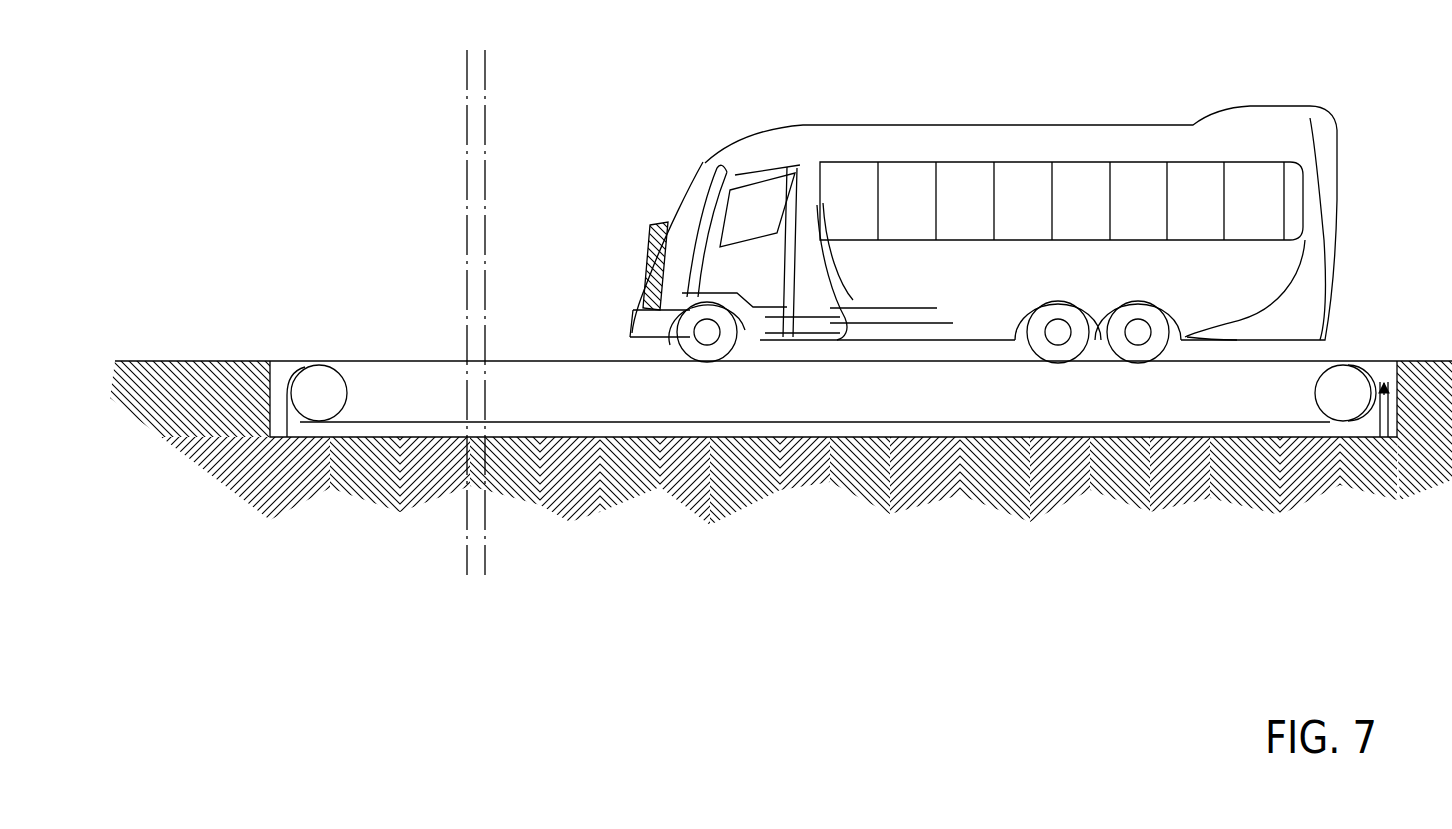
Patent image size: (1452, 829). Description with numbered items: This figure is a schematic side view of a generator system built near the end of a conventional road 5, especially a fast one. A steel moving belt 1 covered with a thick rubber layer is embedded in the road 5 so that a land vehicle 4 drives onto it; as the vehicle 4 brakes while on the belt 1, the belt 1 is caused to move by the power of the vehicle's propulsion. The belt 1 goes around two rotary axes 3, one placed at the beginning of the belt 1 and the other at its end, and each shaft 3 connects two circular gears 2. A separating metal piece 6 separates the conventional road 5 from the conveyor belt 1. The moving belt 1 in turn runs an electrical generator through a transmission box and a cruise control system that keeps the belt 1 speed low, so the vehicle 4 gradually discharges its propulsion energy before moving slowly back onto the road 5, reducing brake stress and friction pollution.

The metal moving belt 1 is at (447, 408).
The circular gear 2 is at (358, 392).
The rotary axis 3 is at (320, 381).
The land vehicle 4 is at (655, 234).
The conventional road 5 is at (196, 350).
The separating metal piece 6 is at (1397, 445).